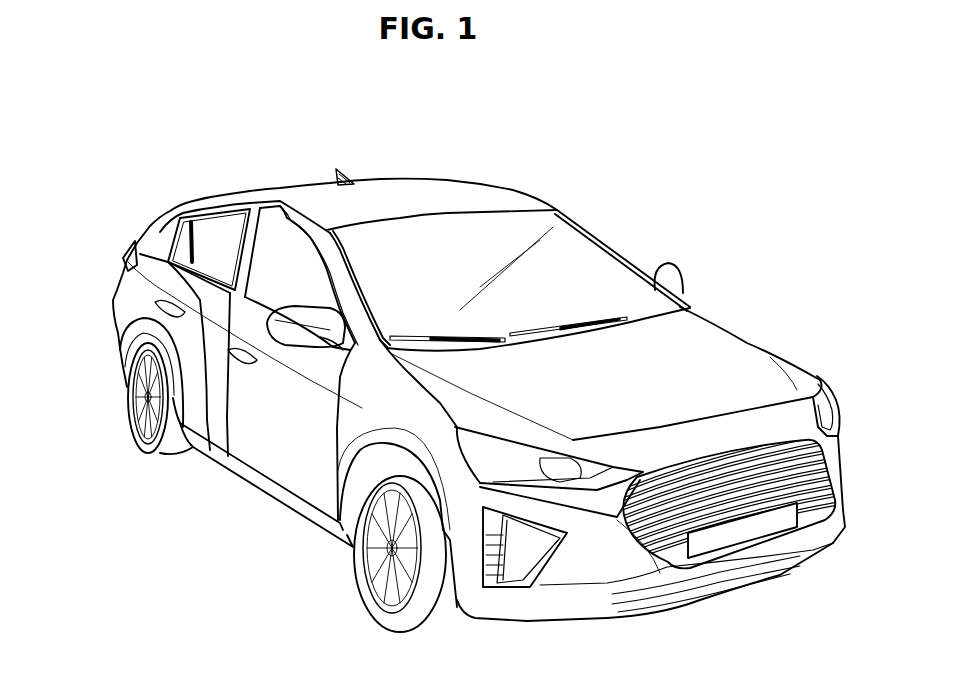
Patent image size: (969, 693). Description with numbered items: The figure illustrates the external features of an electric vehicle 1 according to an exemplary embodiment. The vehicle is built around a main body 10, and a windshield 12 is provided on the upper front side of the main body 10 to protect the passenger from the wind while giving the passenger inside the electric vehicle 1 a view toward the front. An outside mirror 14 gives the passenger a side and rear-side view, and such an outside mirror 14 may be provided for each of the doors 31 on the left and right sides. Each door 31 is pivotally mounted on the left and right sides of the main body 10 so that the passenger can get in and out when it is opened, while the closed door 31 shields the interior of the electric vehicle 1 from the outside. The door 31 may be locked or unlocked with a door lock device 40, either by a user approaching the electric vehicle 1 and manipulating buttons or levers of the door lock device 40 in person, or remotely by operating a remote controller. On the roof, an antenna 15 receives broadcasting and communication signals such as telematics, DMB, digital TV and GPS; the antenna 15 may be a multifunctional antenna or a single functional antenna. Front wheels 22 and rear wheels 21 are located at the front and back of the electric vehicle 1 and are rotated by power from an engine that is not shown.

The electric vehicle 1 is at (598, 96).
The main body 10 is at (633, 214).
The windshield 12 is at (616, 257).
The outside mirror 14 is at (673, 267).
The antenna 15 is at (344, 167).
The rear wheels 21 is at (128, 407).
The front wheels 22 is at (390, 594).
The door 31 is at (258, 456).
The door lock device 40 is at (153, 298).